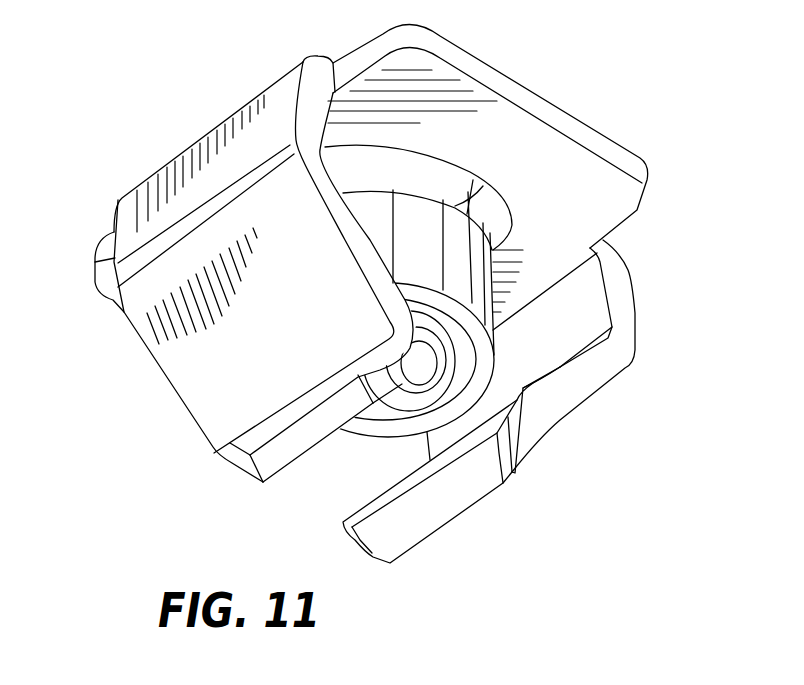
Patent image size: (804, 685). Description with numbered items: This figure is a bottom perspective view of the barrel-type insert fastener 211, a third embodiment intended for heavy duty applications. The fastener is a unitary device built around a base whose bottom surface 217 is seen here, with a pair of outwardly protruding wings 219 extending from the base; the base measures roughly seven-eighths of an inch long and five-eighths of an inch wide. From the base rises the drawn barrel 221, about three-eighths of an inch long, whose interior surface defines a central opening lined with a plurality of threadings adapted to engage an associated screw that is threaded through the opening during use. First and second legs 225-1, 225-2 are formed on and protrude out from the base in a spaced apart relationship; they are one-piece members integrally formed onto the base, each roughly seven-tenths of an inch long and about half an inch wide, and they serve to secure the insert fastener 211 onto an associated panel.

The insert fastener 211 is at (653, 430).
The bottom surface 217 is at (537, 140).
The outwardly protruding wings 219 is at (505, 74).
The drawn barrel 221 is at (458, 262).
The first leg 225-1 is at (148, 383).
The second leg 225-2 is at (500, 510).